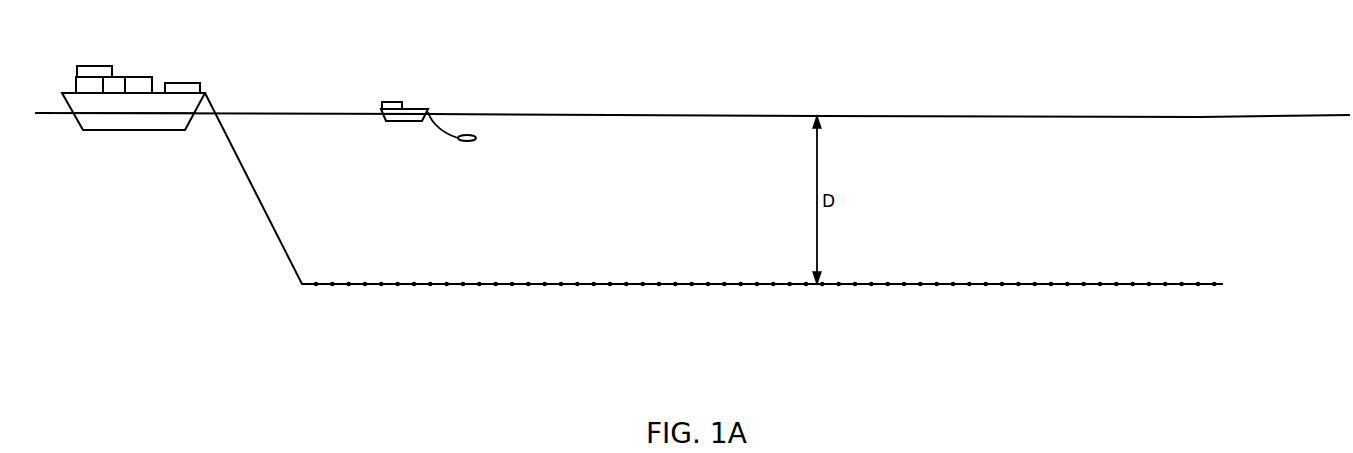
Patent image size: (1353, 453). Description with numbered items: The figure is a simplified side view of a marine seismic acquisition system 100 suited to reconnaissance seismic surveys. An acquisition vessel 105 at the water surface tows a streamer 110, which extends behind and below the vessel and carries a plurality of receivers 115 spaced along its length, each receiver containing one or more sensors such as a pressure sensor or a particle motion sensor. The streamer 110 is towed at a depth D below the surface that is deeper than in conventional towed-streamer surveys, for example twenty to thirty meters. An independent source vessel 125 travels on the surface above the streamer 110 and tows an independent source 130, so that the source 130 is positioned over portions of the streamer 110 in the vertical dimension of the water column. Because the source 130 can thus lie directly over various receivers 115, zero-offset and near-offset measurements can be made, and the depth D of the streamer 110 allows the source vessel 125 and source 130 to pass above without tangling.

The marine seismic acquisition system 100 is at (652, 86).
The acquisition vessel 105 is at (128, 77).
The streamer 110 is at (307, 283).
The receiver 115 is at (382, 283).
The independent source vessel 125 is at (392, 102).
The independent source 130 is at (476, 139).